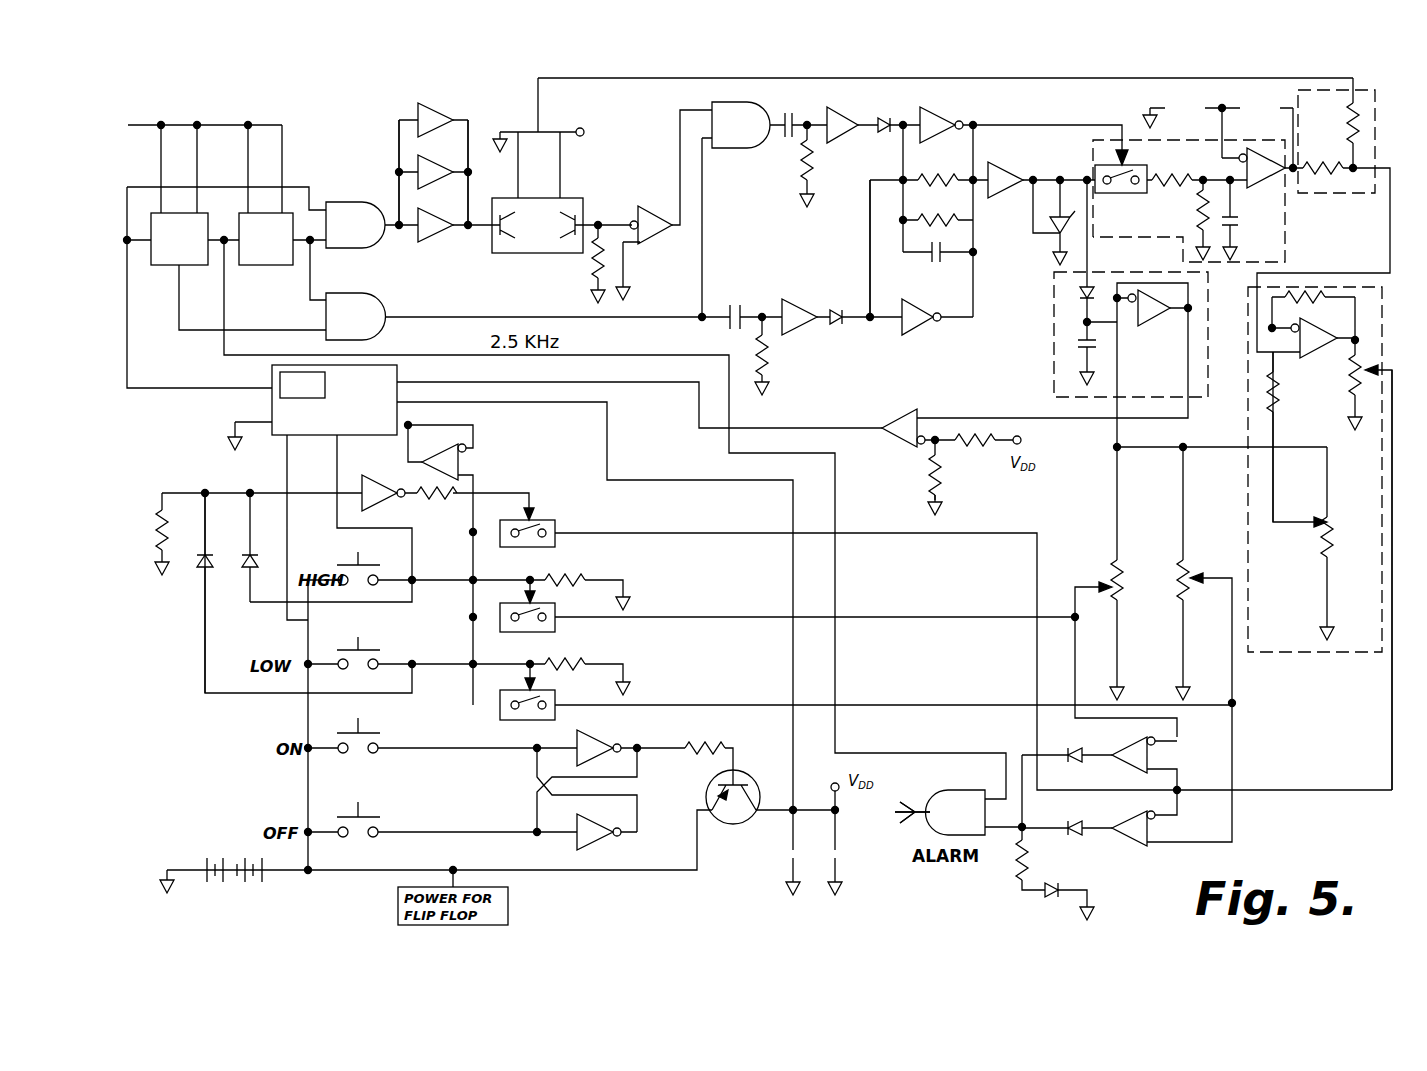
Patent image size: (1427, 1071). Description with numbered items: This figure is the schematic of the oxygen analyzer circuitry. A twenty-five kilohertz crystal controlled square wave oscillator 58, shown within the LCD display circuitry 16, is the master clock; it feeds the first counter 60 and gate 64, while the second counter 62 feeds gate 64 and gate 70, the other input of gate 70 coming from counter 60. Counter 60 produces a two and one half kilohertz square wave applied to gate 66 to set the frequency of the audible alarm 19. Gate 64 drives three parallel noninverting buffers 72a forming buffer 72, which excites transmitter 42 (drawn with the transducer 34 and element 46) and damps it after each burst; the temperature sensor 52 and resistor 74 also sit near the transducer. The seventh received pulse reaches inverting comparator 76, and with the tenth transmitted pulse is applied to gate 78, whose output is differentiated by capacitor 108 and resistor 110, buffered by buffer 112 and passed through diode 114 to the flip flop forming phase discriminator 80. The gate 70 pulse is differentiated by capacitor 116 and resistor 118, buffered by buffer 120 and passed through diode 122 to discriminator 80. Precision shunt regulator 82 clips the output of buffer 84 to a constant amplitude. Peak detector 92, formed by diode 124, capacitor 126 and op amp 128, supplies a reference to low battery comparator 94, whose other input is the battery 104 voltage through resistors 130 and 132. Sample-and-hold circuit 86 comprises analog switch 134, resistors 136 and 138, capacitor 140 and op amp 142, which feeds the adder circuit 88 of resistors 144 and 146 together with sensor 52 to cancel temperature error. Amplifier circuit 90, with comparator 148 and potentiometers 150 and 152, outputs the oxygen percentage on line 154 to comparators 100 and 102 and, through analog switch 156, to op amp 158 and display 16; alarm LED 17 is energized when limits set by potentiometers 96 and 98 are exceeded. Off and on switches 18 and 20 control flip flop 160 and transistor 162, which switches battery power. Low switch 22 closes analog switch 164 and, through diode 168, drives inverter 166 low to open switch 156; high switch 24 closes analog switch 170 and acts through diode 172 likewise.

The display circuitry 16 is at (272, 436).
The alarm LED 17 is at (1045, 893).
The off membrane switch 18 is at (373, 817).
The audible alarm 19 is at (905, 818).
The on membrane switch 20 is at (375, 733).
The low membrane switch 22 is at (370, 646).
The high membrane switch 24 is at (370, 562).
The ultrasonic transducer 34 is at (535, 250).
The transmitter 42 is at (504, 242).
The transducer element 46 is at (571, 242).
The temperature sensor 52 is at (560, 160).
The crystal controlled square wave oscillator 58 is at (272, 380).
The first counter 60 is at (176, 266).
The second counter 62 is at (284, 266).
The gate 64 is at (364, 208).
The gate 66 is at (970, 800).
The gate 70 is at (372, 302).
The buffer 72 is at (368, 108).
The noninverting buffer 72a is at (440, 115).
The resistor 74 is at (596, 265).
The inverting comparator 76 is at (669, 216).
The gate 78 is at (741, 150).
The phase discriminator 80 is at (962, 326).
The precision shunt regulator 82 is at (1053, 230).
The buffer 84 is at (1005, 180).
The sample-and-hold circuit 86 is at (1290, 243).
The adder circuit 88 is at (1375, 122).
The amplifier circuit 90 is at (1297, 648).
The peak detector 92 is at (1054, 390).
The low battery comparator 94 is at (895, 422).
The high alarm setting potentiometer 96 is at (1113, 570).
The low alarm setting potentiometer 98 is at (1192, 572).
The comparator 100 is at (1155, 758).
The comparator 102 is at (1155, 832).
The battery 104 is at (228, 858).
The capacitor 108 is at (789, 138).
The resistor 110 is at (812, 172).
The noninverting buffer 112 is at (838, 140).
The diode 114 is at (883, 118).
The capacitor 116 is at (742, 305).
The resistor 118 is at (770, 362).
The noninverting buffer 120 is at (806, 300).
The diode 122 is at (845, 308).
The diode 124 is at (1080, 294).
The capacitor 126 is at (1100, 348).
The operational amplifier 128 is at (1152, 318).
The resistor 130 is at (958, 442).
The resistor 132 is at (945, 480).
The analog switch 134 is at (1130, 168).
The resistor 136 is at (1190, 190).
The resistor 138 is at (1200, 224).
The capacitor 140 is at (1238, 225).
The op amp 142 is at (1279, 176).
The resistor 144 is at (1333, 170).
The resistor 146 is at (1353, 108).
The comparator 148 is at (1326, 346).
The potentiometer 150 is at (1372, 378).
The potentiometer 152 is at (1317, 536).
The line 154 is at (1392, 714).
The analog switch 156 is at (550, 520).
The op amp 158 is at (467, 453).
The flip flop 160 is at (628, 742).
The transistor 162 is at (740, 776).
The analog switch 164 is at (555, 700).
The inverter 166 is at (389, 490).
The diode 168 is at (204, 574).
The analog switch 170 is at (555, 630).
The diode 172 is at (250, 575).